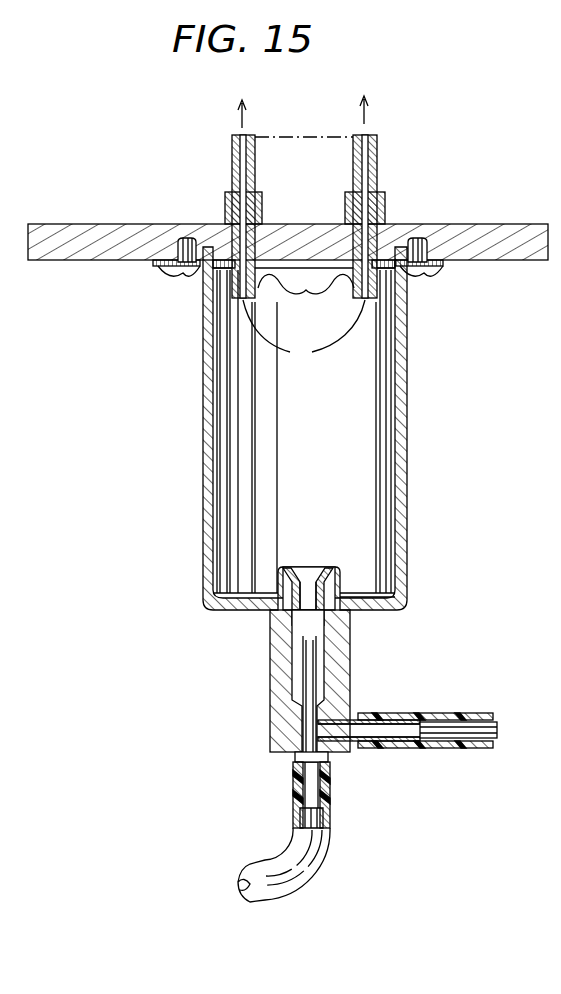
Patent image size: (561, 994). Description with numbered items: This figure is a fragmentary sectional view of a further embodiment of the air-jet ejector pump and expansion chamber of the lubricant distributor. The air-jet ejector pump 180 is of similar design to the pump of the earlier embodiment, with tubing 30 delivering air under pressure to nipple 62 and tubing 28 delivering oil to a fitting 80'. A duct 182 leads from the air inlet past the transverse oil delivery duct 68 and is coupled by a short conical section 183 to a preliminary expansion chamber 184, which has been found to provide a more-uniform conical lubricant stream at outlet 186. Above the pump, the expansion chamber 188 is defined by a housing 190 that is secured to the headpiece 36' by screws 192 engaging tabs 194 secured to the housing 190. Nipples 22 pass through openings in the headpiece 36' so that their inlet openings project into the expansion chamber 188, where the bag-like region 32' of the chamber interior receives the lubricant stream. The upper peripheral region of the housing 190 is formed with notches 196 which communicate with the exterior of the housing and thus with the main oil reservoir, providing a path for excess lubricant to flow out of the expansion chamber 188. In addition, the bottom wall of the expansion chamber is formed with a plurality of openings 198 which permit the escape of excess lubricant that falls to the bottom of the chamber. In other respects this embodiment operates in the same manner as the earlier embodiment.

The nipples 22 is at (262, 207).
The headpiece 36' is at (288, 227).
The tabs 194 is at (183, 264).
The screws 192 is at (178, 278).
The notches 196 is at (306, 295).
The collapsible bag 32' is at (309, 446).
The expansion chamber 188 is at (386, 392).
The housing 190 is at (407, 437).
The outlet 186 is at (301, 567).
The preliminary expansion chamber 184 is at (313, 584).
The openings 198 is at (366, 612).
The conical section 183 is at (322, 634).
The duct 182 is at (302, 664).
The air-jet ejector pump 180 is at (384, 694).
The inner tube 68 is at (338, 720).
The fitting 80' is at (425, 720).
The tubing 28 is at (490, 714).
The nipple 62 is at (330, 791).
The tubing 30 is at (322, 860).